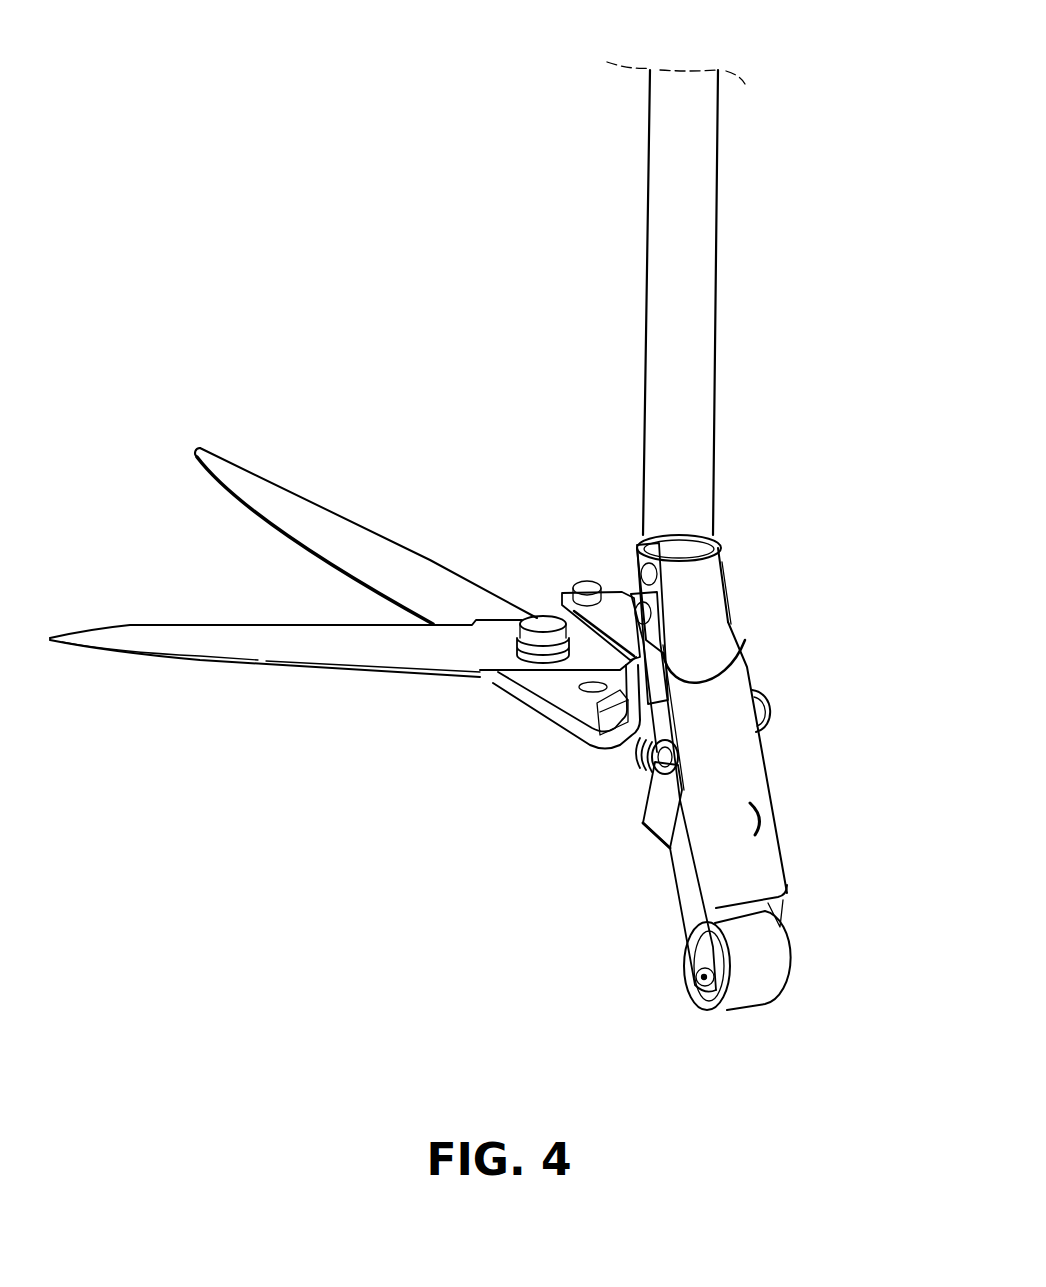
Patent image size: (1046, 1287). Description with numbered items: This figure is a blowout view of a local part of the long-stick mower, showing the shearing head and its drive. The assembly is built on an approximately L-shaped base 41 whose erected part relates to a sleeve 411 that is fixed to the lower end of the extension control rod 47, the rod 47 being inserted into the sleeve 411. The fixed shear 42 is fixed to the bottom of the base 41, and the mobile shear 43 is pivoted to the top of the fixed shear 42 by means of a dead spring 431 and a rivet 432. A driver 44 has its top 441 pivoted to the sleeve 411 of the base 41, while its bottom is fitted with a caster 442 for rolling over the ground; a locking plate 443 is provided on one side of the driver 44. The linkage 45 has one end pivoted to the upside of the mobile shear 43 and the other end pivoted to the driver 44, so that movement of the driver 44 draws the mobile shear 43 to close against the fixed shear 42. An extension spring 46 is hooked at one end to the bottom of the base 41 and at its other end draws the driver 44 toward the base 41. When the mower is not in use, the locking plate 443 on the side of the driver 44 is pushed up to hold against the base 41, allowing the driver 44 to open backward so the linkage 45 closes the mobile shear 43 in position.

The base 41 is at (560, 717).
The fixed shear 42 is at (305, 508).
The mobile shear 43 is at (205, 640).
The dead spring 431 is at (520, 648).
The rivet 432 is at (543, 617).
The driver 44 is at (768, 858).
The top of the driver 441 is at (652, 636).
The caster 442 is at (773, 980).
The locking plate 443 is at (660, 824).
The linkage 45 is at (617, 600).
The extension spring 46 is at (632, 758).
The extension control rod 47 is at (668, 233).
The sleeve 411 is at (702, 590).